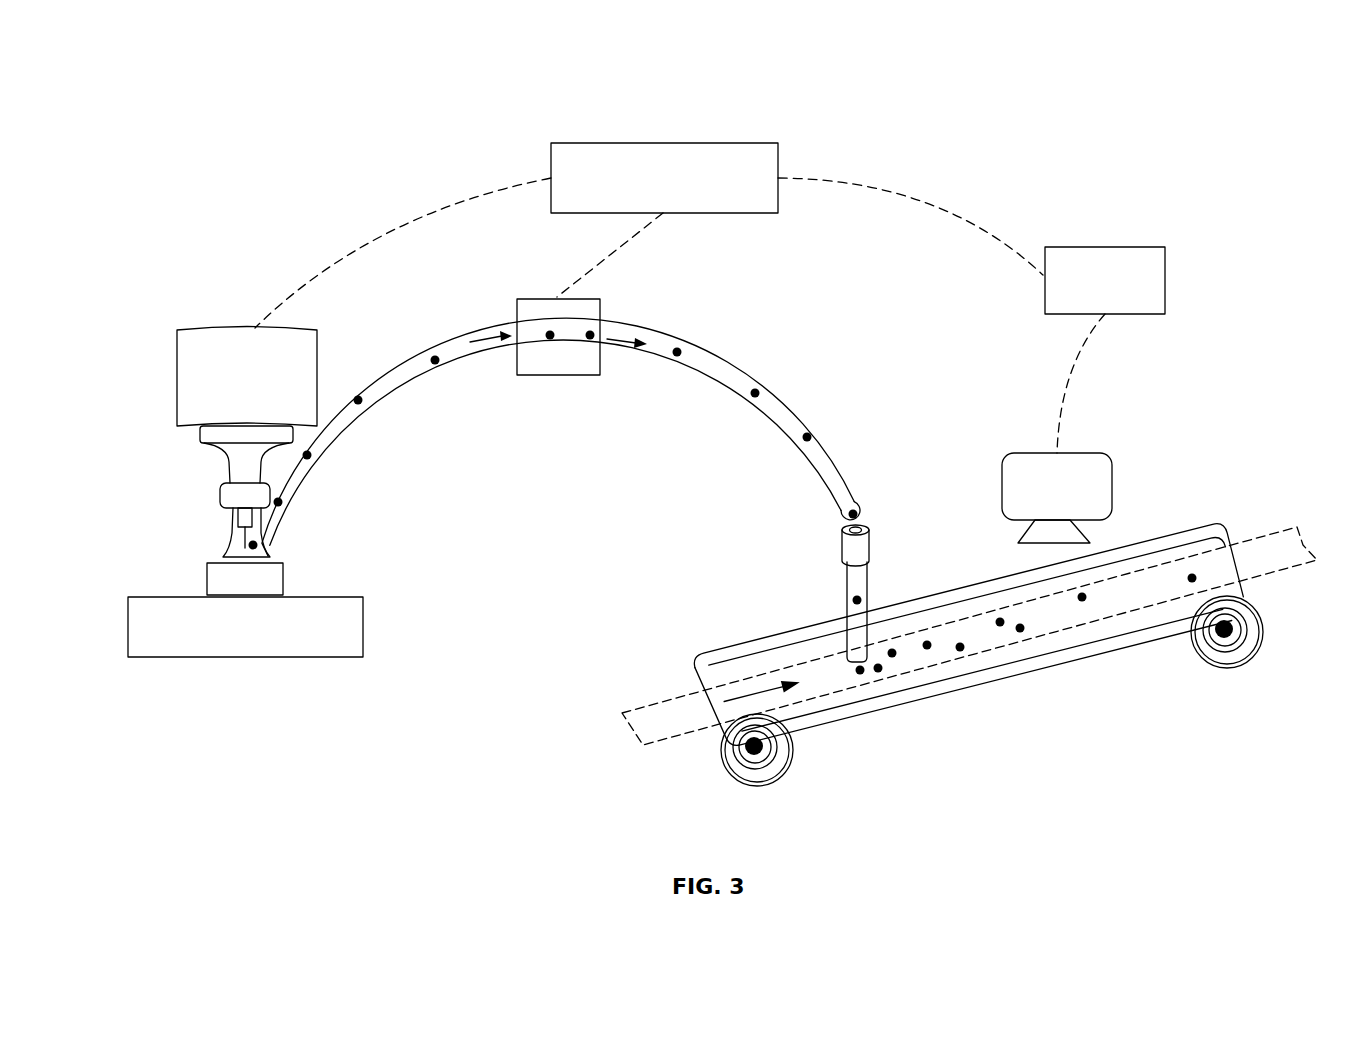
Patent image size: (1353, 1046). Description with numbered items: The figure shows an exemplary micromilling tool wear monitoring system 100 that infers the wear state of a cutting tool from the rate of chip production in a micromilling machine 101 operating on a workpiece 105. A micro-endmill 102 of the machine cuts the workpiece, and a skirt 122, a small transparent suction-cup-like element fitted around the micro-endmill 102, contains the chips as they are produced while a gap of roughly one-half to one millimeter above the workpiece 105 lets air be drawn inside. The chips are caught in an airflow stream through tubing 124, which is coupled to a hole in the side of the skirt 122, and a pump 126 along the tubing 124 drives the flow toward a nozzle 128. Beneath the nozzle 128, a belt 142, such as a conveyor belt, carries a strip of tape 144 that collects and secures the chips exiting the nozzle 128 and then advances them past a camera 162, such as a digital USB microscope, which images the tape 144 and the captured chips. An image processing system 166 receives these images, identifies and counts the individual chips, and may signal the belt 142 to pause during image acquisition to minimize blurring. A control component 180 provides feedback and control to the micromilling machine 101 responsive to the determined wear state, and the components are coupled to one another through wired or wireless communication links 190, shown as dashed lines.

The tool wear monitoring system 100 is at (323, 168).
The micromilling machine 101 is at (232, 393).
The micro-endmill 102 is at (233, 532).
The workpiece 105 is at (230, 591).
The skirt 122 is at (225, 547).
The tubing 124 is at (297, 483).
The pump 126 is at (600, 315).
The nozzle 128 is at (845, 593).
The belt 142 is at (820, 733).
The tape 144 is at (668, 718).
The camera 162 is at (1042, 499).
The image processing system 166 is at (1090, 293).
The control component 180 is at (650, 190).
The communication links 190 is at (597, 267).